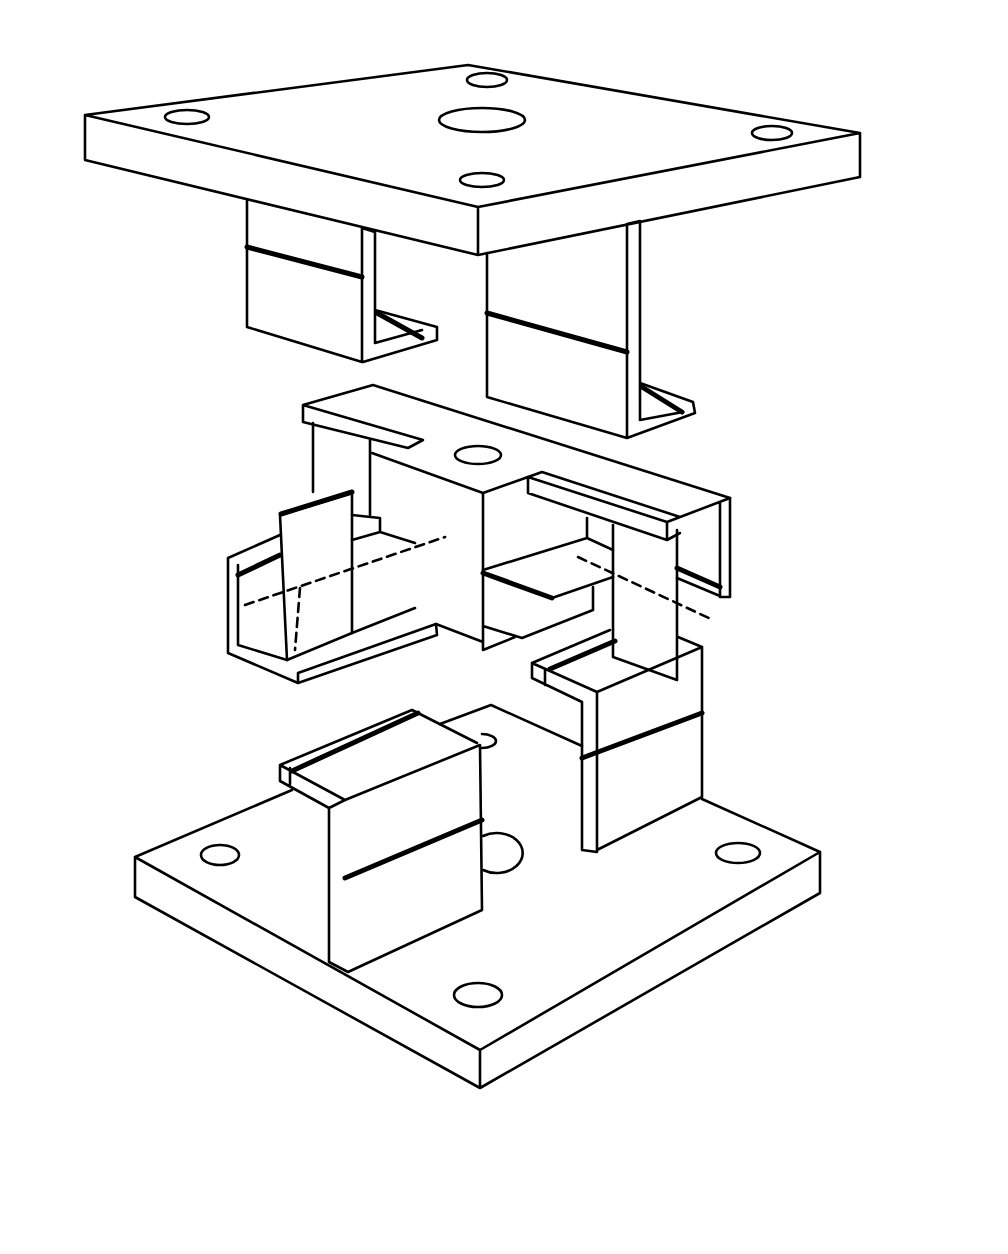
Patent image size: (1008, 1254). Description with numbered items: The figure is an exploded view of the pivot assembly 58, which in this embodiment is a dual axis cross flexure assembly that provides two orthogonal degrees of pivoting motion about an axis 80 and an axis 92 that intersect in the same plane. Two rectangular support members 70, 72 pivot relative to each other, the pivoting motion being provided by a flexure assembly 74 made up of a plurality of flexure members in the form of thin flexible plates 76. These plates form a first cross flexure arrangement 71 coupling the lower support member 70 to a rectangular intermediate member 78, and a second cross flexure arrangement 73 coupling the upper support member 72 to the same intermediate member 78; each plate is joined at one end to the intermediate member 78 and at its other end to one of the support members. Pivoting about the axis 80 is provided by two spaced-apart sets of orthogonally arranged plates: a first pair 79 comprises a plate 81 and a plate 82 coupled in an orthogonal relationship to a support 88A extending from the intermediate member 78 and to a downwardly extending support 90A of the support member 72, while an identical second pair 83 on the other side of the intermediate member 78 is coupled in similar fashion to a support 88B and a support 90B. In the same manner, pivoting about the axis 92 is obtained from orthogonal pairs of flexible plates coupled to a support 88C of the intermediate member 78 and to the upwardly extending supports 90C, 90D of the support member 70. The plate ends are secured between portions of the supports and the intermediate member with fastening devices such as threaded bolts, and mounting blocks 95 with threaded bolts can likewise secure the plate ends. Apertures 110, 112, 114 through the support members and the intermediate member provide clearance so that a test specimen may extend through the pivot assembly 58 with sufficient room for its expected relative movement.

The pivot assembly 58 is at (98, 468).
The support member 70 is at (808, 857).
The first cross flexure arrangement 71 is at (693, 635).
The support member 72 is at (642, 97).
The second cross flexure arrangement 73 is at (300, 467).
The flexure assembly 74 is at (778, 410).
The flexible plates 76 is at (770, 628).
The intermediate member 78 is at (412, 503).
The first pair 79 is at (518, 652).
The axis 80 is at (737, 625).
The plate 81 is at (520, 592).
The plate 82 is at (660, 580).
The second pair 83 is at (297, 428).
The support 88A is at (720, 495).
The support 88B is at (448, 402).
The support 88C is at (227, 612).
The support 90A is at (642, 303).
The support 90B is at (247, 296).
The support 90C is at (329, 843).
The support 90D is at (702, 737).
The axis 92 is at (280, 670).
The mounting blocks 95 is at (397, 312).
The aperture 110 is at (518, 117).
The aperture 112 is at (480, 445).
The aperture 114 is at (523, 858).